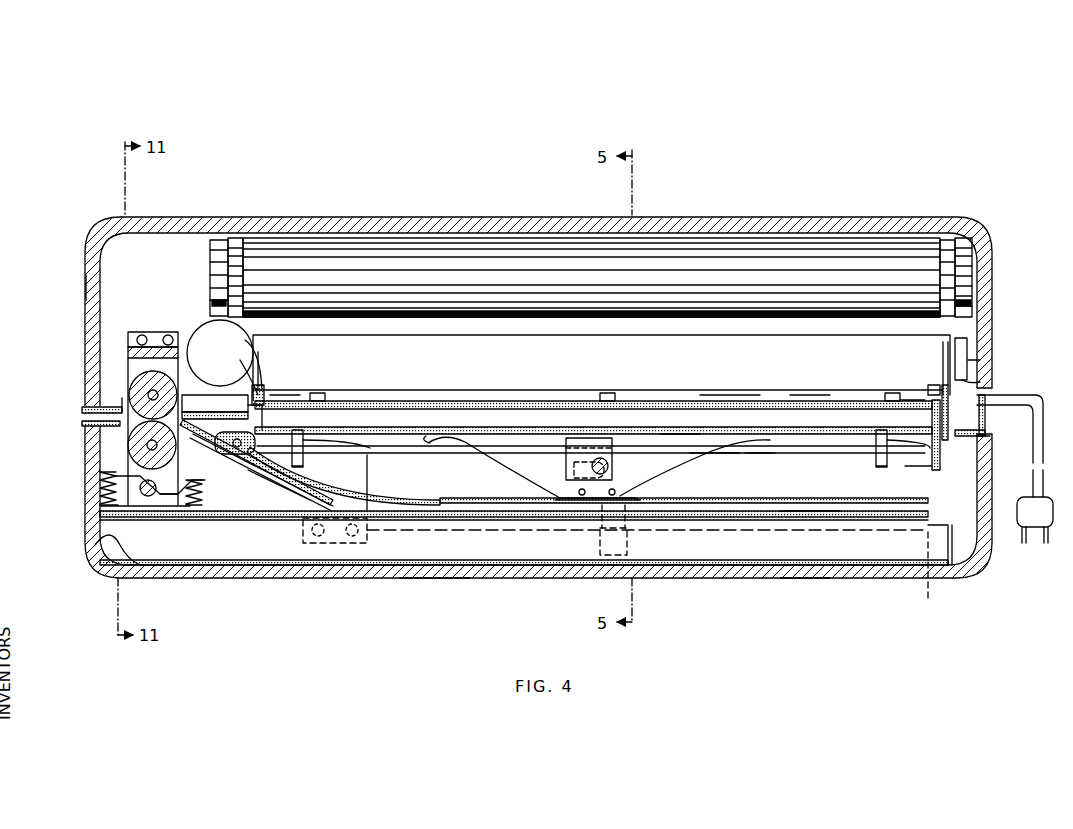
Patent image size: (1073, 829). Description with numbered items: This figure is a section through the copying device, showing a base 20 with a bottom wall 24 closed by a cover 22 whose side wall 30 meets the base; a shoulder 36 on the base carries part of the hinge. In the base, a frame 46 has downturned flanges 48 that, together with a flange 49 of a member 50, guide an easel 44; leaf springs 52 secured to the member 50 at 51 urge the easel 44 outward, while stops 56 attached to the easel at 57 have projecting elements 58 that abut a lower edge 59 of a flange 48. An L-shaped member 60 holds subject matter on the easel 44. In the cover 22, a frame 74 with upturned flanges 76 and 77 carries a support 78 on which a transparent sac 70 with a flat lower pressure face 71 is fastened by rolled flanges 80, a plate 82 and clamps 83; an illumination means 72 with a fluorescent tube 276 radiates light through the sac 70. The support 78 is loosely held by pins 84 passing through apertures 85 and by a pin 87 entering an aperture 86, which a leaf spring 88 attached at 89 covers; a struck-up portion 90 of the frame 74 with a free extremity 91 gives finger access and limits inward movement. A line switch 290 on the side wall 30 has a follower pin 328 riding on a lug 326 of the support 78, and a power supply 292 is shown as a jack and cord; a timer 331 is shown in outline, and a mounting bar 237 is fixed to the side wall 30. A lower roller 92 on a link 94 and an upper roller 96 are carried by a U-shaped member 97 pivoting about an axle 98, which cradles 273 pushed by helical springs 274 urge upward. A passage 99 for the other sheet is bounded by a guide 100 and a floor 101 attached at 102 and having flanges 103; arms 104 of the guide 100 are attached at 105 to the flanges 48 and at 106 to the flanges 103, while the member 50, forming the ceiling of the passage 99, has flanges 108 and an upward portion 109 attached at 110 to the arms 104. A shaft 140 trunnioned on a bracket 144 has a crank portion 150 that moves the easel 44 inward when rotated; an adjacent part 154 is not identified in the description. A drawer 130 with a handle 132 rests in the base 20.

The base 20 is at (434, 580).
The cover 22 is at (790, 215).
The bottom wall 24 is at (805, 578).
The side wall 30 is at (92, 285).
The shoulder 36 is at (990, 440).
The easel 44 is at (800, 432).
The frame 46 is at (943, 465).
The downturned flanges 48 is at (790, 455).
The flange 49 is at (220, 484).
The member 50 is at (370, 480).
The securing point 51 is at (590, 505).
The leaf springs 52 is at (705, 458).
The stops 56 is at (355, 432).
The attachment point 57 is at (312, 428).
The horizontally projecting element 58 is at (303, 455).
The lower edge 59 is at (760, 458).
The L-shaped sheet metal member 60 is at (240, 416).
The sac 70 is at (726, 398).
The lower pressure face 71 is at (672, 432).
The illumination means 72 is at (208, 241).
The frame 74 is at (990, 432).
The upturned flanges 76 is at (942, 440).
The upturned flanges 77 is at (648, 340).
The support 78 is at (280, 398).
The rolled flanges 80 is at (262, 420).
The plate 82 is at (450, 398).
The clamps 83 is at (320, 395).
The pins 84 is at (245, 342).
The aperture 85 is at (264, 390).
The aperture 86 is at (945, 360).
The pin 87 is at (985, 420).
The leaf spring 88 is at (928, 385).
The attachment point 89 is at (905, 395).
The struck-up portion 90 is at (240, 360).
The free extremity 91 is at (258, 360).
The lower roller 92 is at (128, 446).
The link 94 is at (140, 478).
The upper roller 96 is at (130, 388).
The U-shaped mounting member 97 is at (180, 500).
The axle 98 is at (150, 498).
The passage 99 is at (282, 486).
The guide 100 is at (258, 490).
The floor 101 is at (800, 511).
The attachment point 102 is at (95, 500).
The downturned flanges 103 is at (922, 598).
The arms 104 is at (300, 508).
The attachment point 105 is at (190, 408).
The attachment point 106 is at (305, 540).
The downturned flanges 108 is at (432, 532).
The upwardly extending portion 109 is at (300, 482).
The attachment point 110 is at (222, 442).
The drawer 130 is at (800, 562).
The handle 132 is at (100, 545).
The shaft 140 is at (640, 482).
The bracket 144 is at (625, 532).
The crank portion 150 is at (612, 468).
The clamp block 154 is at (572, 472).
The mounting bar 237 is at (140, 345).
The cradles 273 is at (150, 514).
The helical springs 274 is at (100, 490).
The fluorescent tube 276 is at (503, 257).
The line switch 290 is at (967, 342).
The alternating current power supply 292 is at (1022, 540).
The lug 326 is at (980, 382).
The follower pin 328 is at (978, 362).
The timer 331 is at (215, 322).